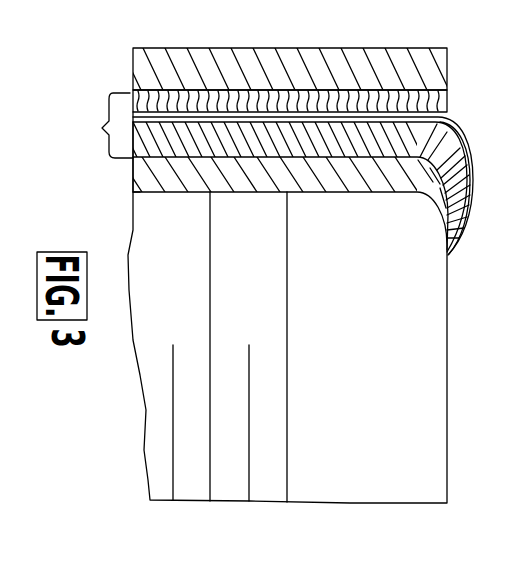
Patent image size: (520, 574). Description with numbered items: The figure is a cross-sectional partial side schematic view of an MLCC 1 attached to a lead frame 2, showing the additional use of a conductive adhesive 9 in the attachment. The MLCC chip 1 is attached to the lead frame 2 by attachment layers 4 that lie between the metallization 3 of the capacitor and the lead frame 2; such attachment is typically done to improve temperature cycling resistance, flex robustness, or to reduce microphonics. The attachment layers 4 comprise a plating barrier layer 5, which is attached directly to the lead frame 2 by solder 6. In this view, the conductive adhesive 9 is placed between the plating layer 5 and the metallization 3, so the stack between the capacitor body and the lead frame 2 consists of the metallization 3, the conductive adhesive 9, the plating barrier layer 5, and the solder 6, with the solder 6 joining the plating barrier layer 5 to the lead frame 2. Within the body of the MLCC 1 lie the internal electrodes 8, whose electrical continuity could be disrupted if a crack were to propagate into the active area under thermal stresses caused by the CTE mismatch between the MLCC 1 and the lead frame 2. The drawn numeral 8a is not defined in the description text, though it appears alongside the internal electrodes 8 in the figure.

The MLCC 1 is at (360, 450).
The lead frame 2 is at (399, 48).
The metallization 3 is at (132, 178).
The attachment layers 4 is at (103, 128).
The plating barrier layer 5 is at (472, 185).
The solder 6 is at (452, 100).
The internal electrode 8 is at (211, 470).
The auxiliary groove 8a is at (174, 480).
The conductive adhesive 9 is at (202, 163).